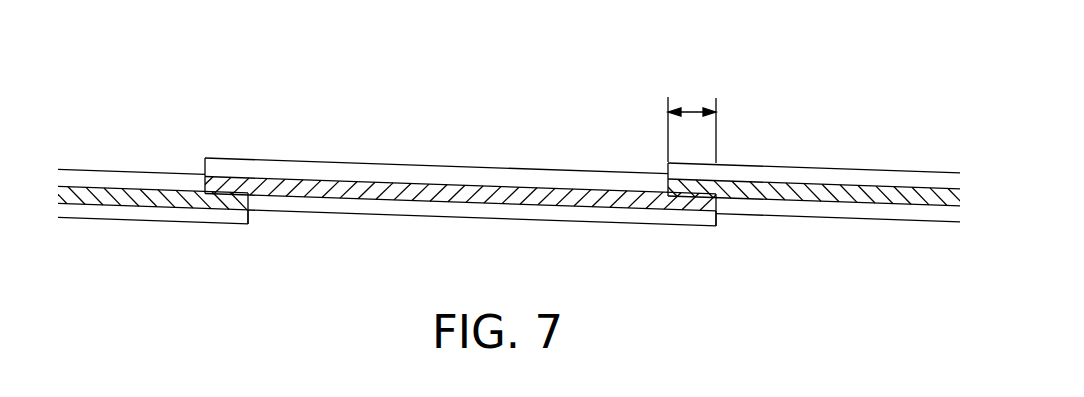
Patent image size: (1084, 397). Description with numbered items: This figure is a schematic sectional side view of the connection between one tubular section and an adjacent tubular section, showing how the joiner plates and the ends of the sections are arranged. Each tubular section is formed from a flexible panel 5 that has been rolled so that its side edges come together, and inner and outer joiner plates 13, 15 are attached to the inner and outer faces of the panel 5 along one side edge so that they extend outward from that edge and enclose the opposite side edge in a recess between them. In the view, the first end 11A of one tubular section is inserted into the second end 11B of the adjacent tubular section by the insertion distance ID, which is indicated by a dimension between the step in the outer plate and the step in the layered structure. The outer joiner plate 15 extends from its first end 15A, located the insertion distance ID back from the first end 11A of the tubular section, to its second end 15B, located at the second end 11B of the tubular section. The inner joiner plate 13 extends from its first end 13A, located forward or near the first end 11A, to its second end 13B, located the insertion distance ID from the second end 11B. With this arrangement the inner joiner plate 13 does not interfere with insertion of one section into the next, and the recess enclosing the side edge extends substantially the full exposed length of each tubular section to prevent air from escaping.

The panel 5 is at (402, 183).
The first end of the tubular section 11A is at (716, 213).
The second end of the tubular section 11B is at (204, 183).
The inner joiner plate 13 is at (120, 220).
The first end of the inner joiner plate 13A is at (248, 224).
The second end of the inner joiner plate 13B is at (250, 218).
The outer joiner plate 15 is at (82, 169).
The first end of the outer joiner plate 15A is at (683, 177).
The second end of the outer joiner plate 15B is at (203, 160).
The insertion distance ID is at (694, 110).